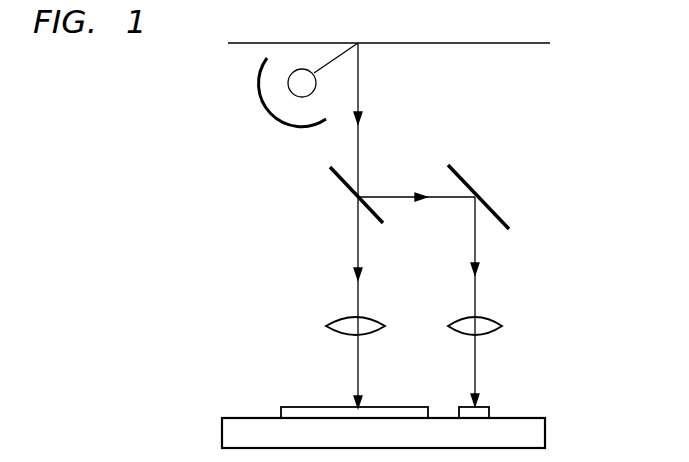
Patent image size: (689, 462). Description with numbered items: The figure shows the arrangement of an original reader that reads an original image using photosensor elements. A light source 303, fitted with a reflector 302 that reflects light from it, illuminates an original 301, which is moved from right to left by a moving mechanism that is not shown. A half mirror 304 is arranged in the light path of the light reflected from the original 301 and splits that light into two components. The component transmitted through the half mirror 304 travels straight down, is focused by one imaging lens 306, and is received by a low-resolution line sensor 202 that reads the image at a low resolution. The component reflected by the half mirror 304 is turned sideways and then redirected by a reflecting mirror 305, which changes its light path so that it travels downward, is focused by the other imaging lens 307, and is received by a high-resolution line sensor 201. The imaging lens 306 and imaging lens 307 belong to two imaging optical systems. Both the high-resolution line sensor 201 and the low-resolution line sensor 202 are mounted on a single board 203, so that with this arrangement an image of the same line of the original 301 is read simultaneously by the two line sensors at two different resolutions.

The original 301 is at (472, 43).
The reflector 302 is at (266, 112).
The light source 303 is at (297, 86).
The half mirror 304 is at (341, 180).
The reflecting mirror 305 is at (470, 177).
The imaging lens 306 is at (326, 322).
The imaging lens 307 is at (498, 328).
The low-resolution line sensor 202 is at (390, 405).
The high-resolution line sensor 201 is at (485, 405).
The board 203 is at (547, 433).